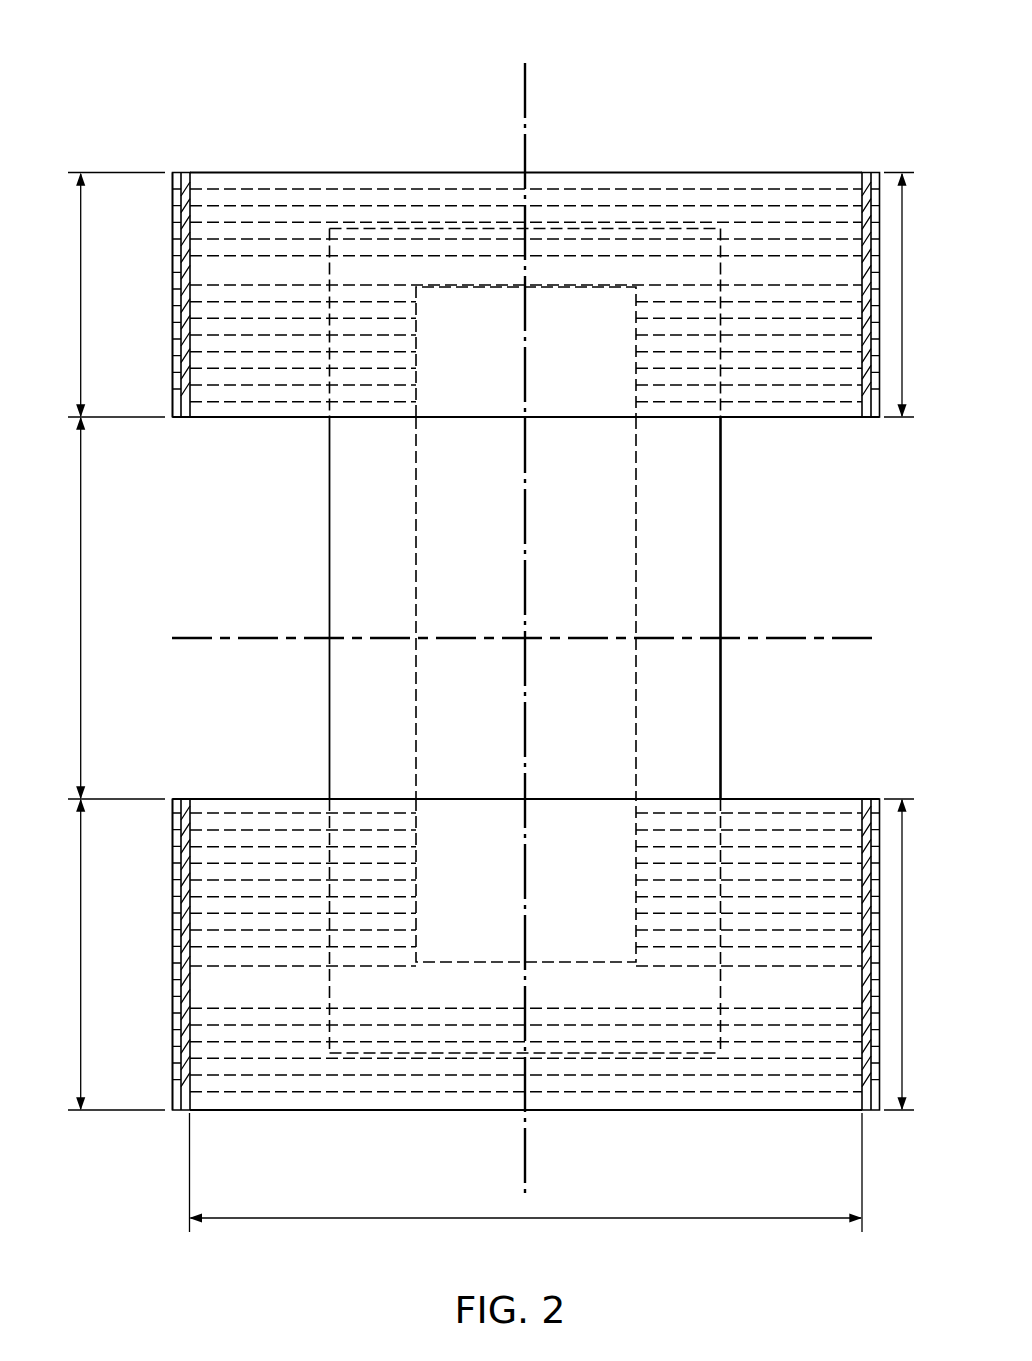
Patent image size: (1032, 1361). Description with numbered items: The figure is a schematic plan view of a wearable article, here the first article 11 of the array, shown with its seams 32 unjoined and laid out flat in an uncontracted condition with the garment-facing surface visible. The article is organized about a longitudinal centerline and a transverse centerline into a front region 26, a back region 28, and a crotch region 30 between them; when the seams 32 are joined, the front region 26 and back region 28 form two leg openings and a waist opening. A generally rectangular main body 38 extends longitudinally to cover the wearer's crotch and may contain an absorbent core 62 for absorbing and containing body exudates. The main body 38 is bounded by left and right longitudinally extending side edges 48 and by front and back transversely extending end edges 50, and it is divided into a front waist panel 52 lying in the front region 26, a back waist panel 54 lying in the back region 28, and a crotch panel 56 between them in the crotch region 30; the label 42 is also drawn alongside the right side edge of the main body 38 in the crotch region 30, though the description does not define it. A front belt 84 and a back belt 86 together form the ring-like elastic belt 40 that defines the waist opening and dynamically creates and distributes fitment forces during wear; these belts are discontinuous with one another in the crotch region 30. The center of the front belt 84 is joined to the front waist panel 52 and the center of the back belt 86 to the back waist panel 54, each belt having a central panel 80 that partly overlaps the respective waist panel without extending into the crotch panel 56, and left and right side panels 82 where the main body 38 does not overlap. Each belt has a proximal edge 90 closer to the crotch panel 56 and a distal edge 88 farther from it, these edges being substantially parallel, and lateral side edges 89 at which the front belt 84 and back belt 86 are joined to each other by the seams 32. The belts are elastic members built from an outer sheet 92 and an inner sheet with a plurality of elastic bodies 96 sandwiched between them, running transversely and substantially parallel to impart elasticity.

The first article 11 is at (272, 60).
The front region 26 is at (80, 297).
The back region 28 is at (80, 982).
The crotch region 30 is at (80, 608).
The seams 32 is at (182, 171).
The main body 38 is at (723, 592).
The ring-like elastic belt 40 is at (672, 100).
The longitudinal side edge 42 is at (710, 702).
The side edges 48 is at (329, 525).
The end edges 50 is at (400, 226).
The front waist panel 52 is at (453, 370).
The back waist panel 54 is at (453, 899).
The crotch panel 56 is at (328, 609).
The absorbent core 62 is at (416, 560).
The central panel 80 is at (463, 213).
The side panel 82 is at (238, 380).
The front belt 84 is at (812, 172).
The back belt 86 is at (280, 1111).
The distal edge 88 is at (563, 172).
The side edges 89 is at (172, 270).
The proximal edge 90 is at (305, 418).
The outer sheet 92 is at (237, 184).
The elastic bodies 96 is at (207, 209).